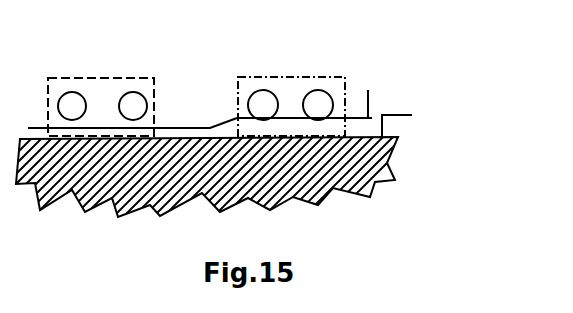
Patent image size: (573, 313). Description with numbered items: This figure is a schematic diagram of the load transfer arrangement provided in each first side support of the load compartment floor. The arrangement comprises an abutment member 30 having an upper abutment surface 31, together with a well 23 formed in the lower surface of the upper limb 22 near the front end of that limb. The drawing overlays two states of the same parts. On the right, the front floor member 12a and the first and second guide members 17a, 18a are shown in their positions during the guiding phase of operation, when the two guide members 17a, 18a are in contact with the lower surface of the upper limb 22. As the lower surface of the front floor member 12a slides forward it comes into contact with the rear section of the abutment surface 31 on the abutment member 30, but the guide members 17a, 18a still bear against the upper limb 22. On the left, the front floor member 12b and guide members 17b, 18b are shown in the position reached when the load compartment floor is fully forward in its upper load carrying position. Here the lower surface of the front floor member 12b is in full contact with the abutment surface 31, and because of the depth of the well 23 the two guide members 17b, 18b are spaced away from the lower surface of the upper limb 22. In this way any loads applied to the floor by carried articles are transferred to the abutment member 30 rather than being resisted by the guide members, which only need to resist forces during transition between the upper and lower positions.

The front floor member 12a is at (345, 77).
The front floor member 12b is at (148, 78).
The first guide member 17a is at (265, 91).
The first guide member 17b is at (63, 92).
The second guide member 18a is at (317, 91).
The second guide member 18b is at (126, 92).
The upper limb 22 is at (368, 90).
The well 23 is at (182, 127).
The abutment member 30 is at (392, 162).
The abutment surface 31 is at (412, 119).